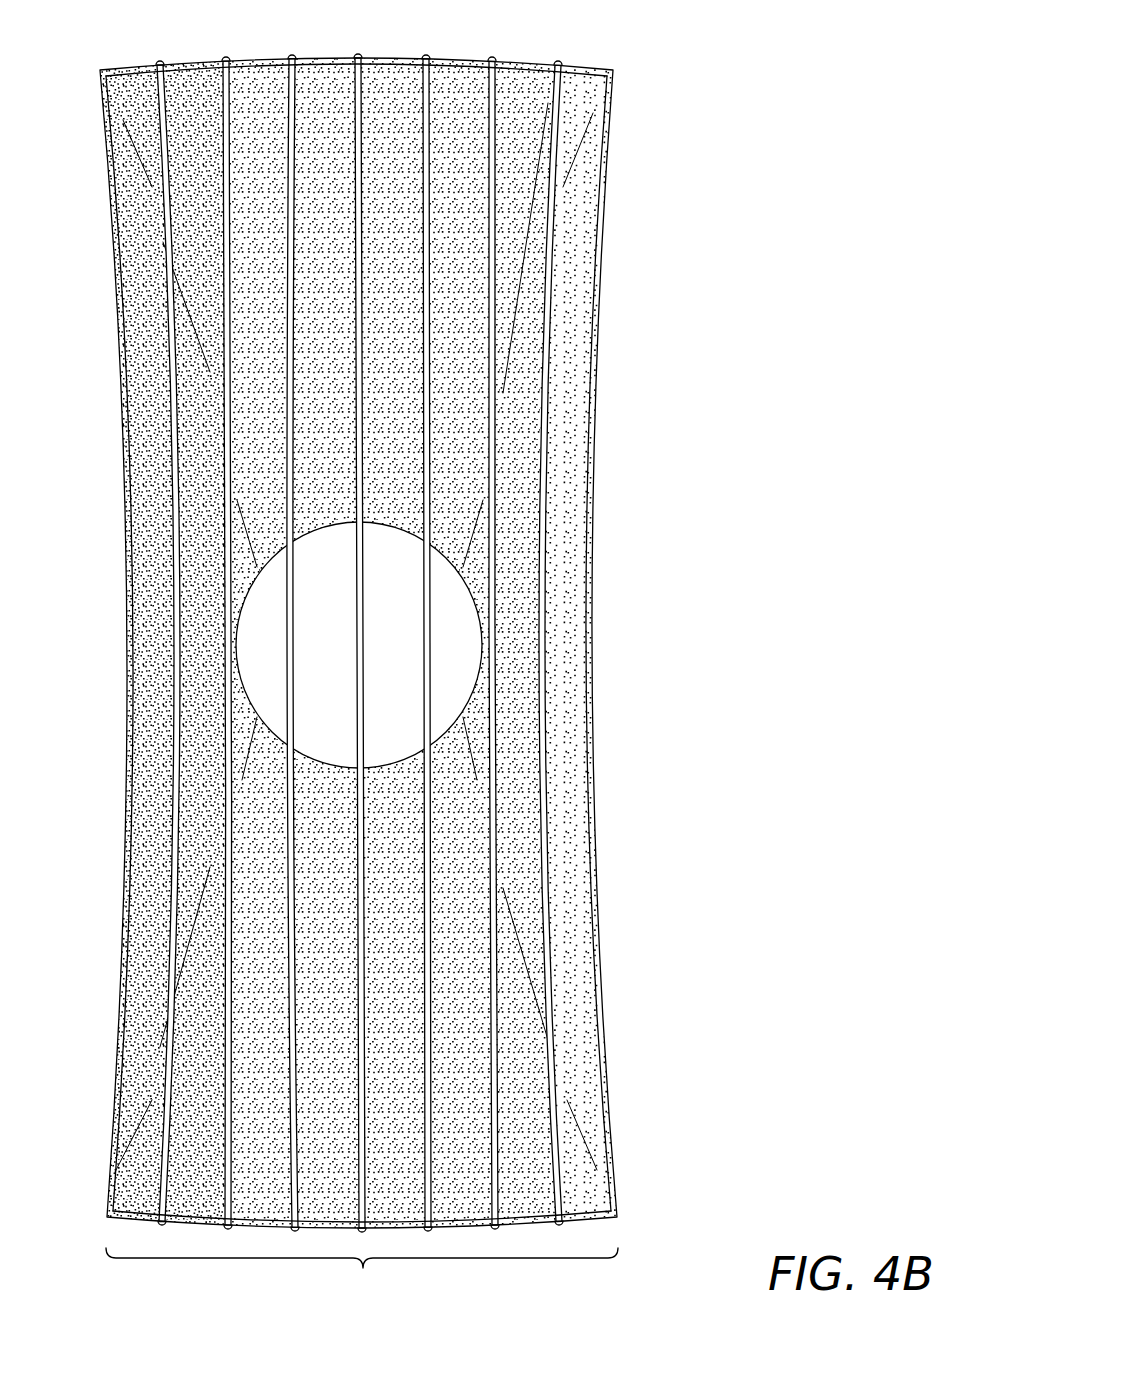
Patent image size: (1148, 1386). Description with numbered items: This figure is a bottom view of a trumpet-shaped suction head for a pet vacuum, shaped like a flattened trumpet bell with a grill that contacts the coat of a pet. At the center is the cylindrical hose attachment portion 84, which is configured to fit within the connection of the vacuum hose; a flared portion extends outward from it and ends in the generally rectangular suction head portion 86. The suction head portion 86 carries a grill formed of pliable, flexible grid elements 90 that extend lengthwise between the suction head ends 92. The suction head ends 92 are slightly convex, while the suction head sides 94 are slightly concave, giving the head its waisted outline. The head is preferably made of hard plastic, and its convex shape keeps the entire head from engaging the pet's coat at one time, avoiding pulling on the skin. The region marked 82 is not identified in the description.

The stippled panel segment 82 is at (578, 535).
The cylindrical hose attachment portion 84 is at (478, 685).
The suction head portion 86 is at (598, 1015).
The grid elements 90 is at (362, 1273).
The suction head ends 92 is at (255, 70).
The suction head sides 94 is at (592, 398).